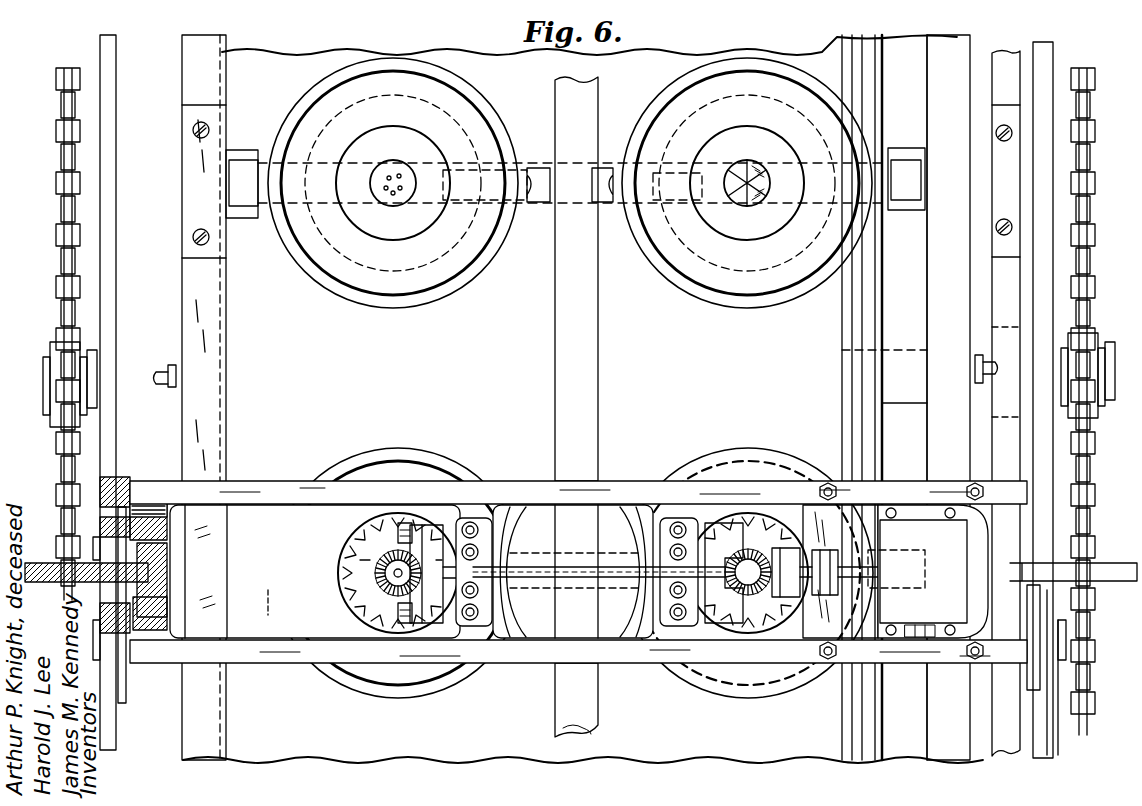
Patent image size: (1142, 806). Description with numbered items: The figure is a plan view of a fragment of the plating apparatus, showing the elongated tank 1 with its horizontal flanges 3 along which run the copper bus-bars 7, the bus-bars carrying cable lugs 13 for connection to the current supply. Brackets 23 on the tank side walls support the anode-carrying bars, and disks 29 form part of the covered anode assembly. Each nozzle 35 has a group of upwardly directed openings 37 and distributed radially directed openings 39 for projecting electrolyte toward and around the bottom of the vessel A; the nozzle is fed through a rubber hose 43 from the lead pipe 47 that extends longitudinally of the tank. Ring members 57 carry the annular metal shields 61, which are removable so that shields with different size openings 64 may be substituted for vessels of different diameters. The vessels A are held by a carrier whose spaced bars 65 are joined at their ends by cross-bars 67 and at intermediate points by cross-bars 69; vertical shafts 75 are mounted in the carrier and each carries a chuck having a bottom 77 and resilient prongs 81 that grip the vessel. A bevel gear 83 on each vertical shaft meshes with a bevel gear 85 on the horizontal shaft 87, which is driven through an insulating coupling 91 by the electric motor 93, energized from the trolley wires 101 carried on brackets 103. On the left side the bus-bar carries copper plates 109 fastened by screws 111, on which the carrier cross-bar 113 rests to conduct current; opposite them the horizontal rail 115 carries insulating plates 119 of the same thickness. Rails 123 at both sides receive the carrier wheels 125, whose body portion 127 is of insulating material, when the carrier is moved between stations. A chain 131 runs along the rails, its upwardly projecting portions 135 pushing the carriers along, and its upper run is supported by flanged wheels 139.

The tank 1 is at (318, 56).
The flanges 3 is at (603, 168).
The bus-bars 7 is at (214, 412).
The cable lugs 13 is at (166, 375).
The brackets 23 is at (245, 152).
The disks 29 is at (50, 558).
The nozzle 35 is at (386, 171).
The upwardly directed openings 37 is at (400, 176).
The radially directed openings 39 is at (765, 170).
The rubber hose 43 is at (470, 170).
The lead pipe 47 is at (598, 452).
The ring members 57 is at (305, 102).
The annular metal shields 61 is at (472, 120).
The openings 64 is at (390, 128).
The spaced bars 65 is at (280, 483).
The cross-bars 67 is at (168, 566).
The cross-bars 69 is at (500, 628).
The vertical shafts 75 is at (392, 588).
The bottom 77 is at (362, 568).
The resilient prongs 81 is at (348, 622).
The bevel gear 83 is at (394, 556).
The bevel gear 85 is at (426, 556).
The horizontal shaft 87 is at (615, 566).
The insulating coupling 91 is at (824, 598).
The electric motor 93 is at (982, 538).
The trolley wires 101 is at (842, 317).
The brackets 103 is at (903, 362).
The plates 109 is at (190, 193).
The screws 111 is at (193, 130).
The cross-bar 113 is at (212, 630).
The horizontal rail 115 is at (1000, 273).
The plates 119 is at (1000, 178).
The rails 123 is at (110, 313).
The wheels 125 is at (124, 480).
The body portion 127 is at (125, 495).
The chain 131 is at (56, 88).
The upwardly projecting portions 135 is at (75, 520).
The flanged wheels 139 is at (58, 345).
The cooking vessels A is at (340, 535).